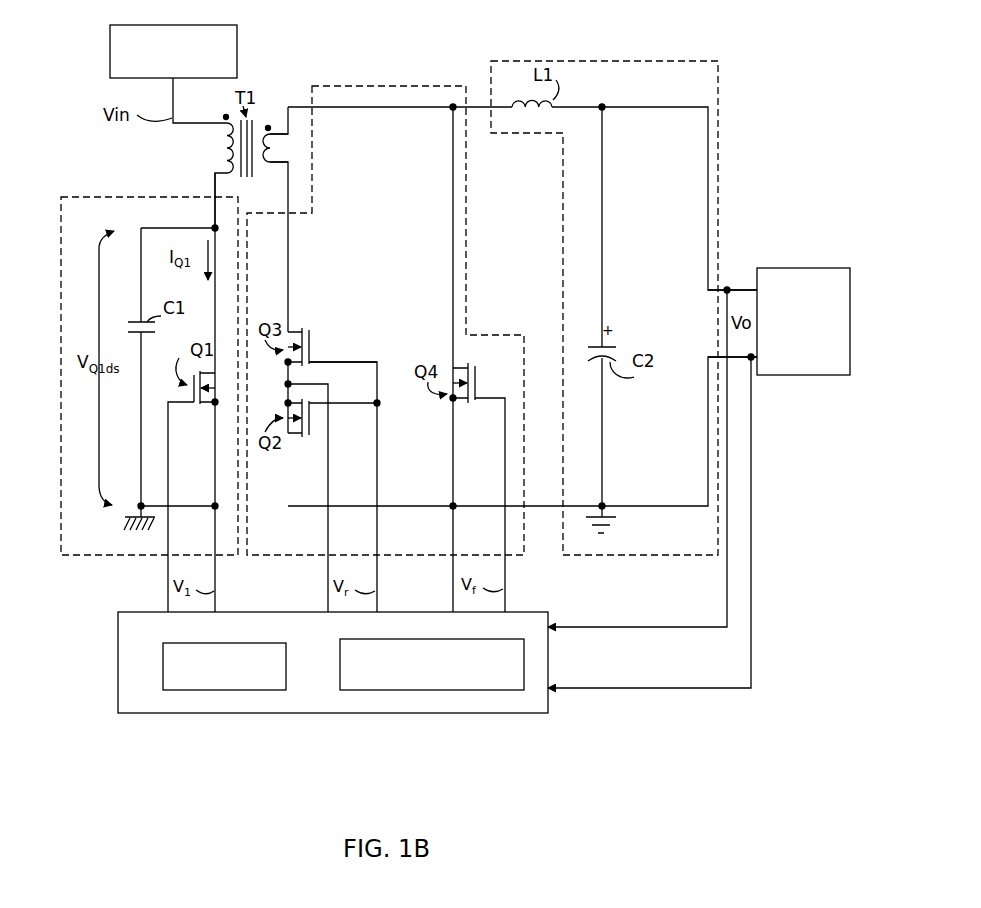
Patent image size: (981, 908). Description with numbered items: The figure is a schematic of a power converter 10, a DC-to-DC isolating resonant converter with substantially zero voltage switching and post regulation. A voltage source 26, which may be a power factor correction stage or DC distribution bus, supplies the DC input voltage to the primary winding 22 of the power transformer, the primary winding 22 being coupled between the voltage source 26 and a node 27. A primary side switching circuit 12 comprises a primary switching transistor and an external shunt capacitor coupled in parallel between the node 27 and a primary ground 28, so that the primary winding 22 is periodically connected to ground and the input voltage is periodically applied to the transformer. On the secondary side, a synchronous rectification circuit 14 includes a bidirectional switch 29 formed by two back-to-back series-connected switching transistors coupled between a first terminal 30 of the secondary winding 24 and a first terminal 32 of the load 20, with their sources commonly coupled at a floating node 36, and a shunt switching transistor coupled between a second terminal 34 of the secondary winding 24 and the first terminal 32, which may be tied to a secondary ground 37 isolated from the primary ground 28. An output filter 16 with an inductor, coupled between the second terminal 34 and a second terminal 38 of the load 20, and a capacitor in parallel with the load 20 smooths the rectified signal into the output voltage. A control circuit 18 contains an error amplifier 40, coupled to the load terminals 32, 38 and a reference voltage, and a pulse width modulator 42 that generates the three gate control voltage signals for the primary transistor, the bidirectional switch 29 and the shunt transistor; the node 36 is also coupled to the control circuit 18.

The power converter 10 is at (750, 57).
The primary side switching circuit 12 is at (60, 262).
The synchronous rectification circuit 14 is at (383, 84).
The output filter 16 is at (586, 60).
The control circuit 18 is at (333, 662).
The load 20 is at (803, 321).
The primary winding 22 is at (227, 130).
The secondary winding 24 is at (279, 126).
The voltage source 26 is at (173, 74).
The node 27 is at (213, 226).
The primary ground 28 is at (125, 521).
The bidirectional switch 29 is at (323, 354).
The first terminal of the secondary winding 30 is at (280, 151).
The first terminal of the load 32 is at (737, 360).
The second terminal of the secondary winding 34 is at (272, 135).
The node 36 is at (284, 384).
The secondary ground 37 is at (615, 518).
The second terminal of the load 38 is at (738, 287).
The error amplifier 40 is at (432, 664).
The pulse width modulator 42 is at (224, 666).